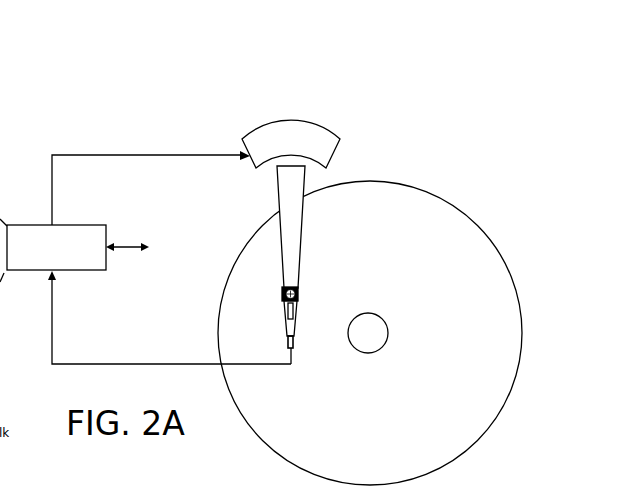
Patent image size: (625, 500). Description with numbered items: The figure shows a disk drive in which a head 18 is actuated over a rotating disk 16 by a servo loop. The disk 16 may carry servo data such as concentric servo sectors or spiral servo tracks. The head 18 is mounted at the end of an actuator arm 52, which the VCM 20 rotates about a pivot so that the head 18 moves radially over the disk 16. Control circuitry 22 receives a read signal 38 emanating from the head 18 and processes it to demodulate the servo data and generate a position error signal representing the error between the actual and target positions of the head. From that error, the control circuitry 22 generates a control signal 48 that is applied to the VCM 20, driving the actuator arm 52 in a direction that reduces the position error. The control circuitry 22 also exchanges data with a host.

The disk 16 is at (474, 213).
The head 18 is at (283, 340).
The VCM 20 is at (252, 160).
The control circuitry 22 is at (83, 225).
The read signal 38 is at (125, 364).
The control signal 48 is at (52, 193).
The actuator arm 52 is at (278, 200).